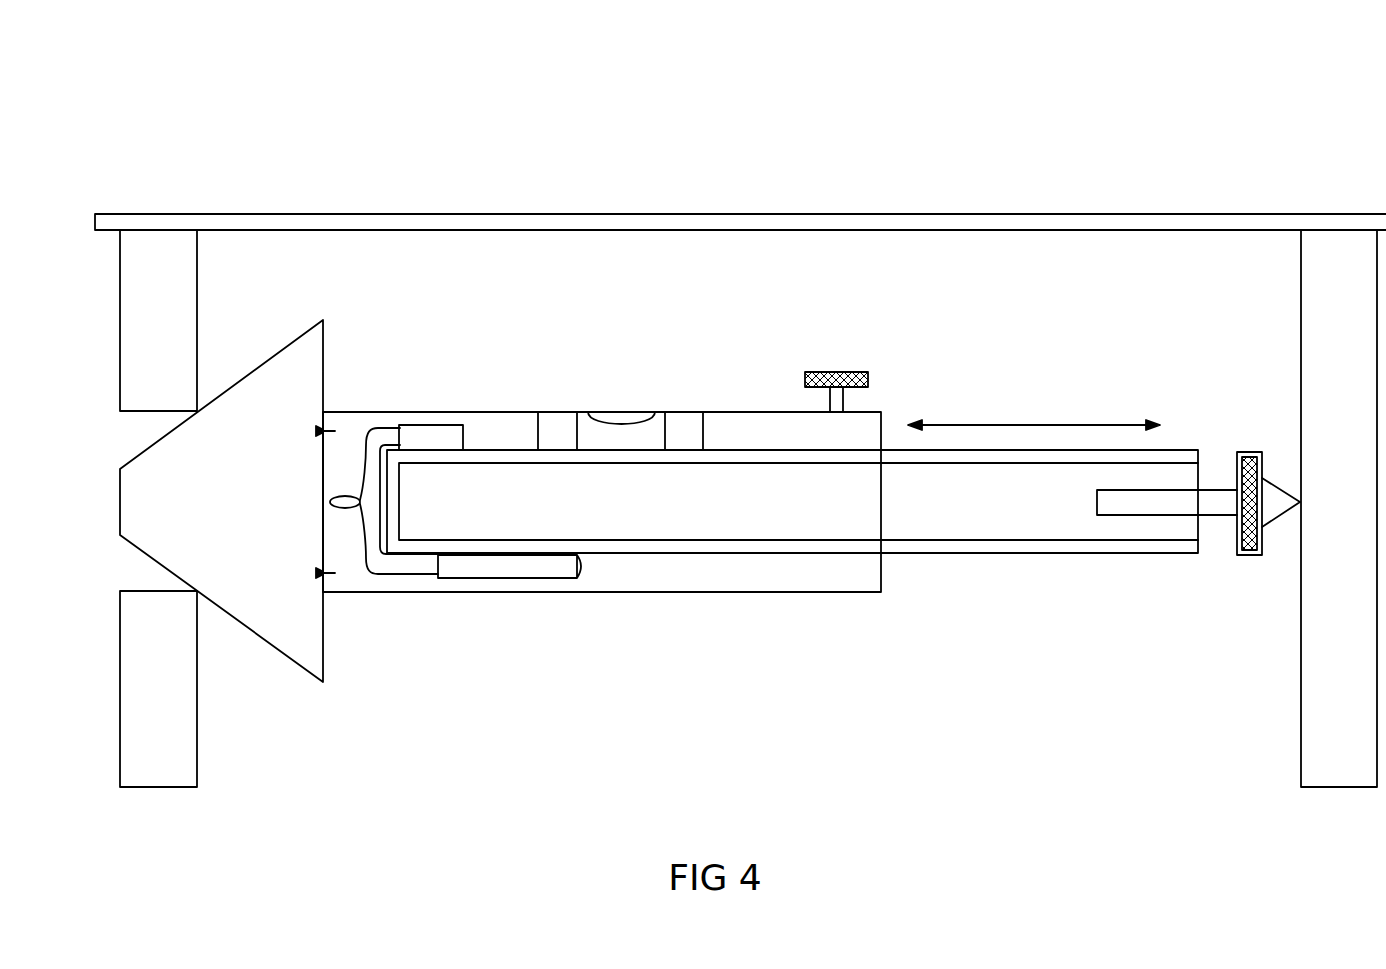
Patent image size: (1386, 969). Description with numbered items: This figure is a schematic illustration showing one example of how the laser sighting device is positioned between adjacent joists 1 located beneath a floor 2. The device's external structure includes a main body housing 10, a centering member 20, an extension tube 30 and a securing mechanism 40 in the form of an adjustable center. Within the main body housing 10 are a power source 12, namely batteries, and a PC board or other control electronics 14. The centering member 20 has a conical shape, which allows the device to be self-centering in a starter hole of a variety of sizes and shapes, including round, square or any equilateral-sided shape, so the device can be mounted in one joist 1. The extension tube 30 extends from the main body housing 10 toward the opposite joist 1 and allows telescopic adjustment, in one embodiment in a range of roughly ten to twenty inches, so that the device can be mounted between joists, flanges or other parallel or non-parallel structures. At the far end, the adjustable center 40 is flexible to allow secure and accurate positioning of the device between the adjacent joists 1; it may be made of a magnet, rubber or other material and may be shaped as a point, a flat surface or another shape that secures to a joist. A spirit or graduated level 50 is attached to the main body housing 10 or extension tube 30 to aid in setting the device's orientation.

The joist 1 is at (158, 257).
The floor 2 is at (488, 218).
The main body housing 10 is at (790, 575).
The power source 12 is at (510, 565).
The control electronics 14 is at (441, 436).
The centering member 20 is at (269, 358).
The extension tube 30 is at (1008, 425).
The securing mechanism 40 is at (1250, 556).
The level 50 is at (625, 412).